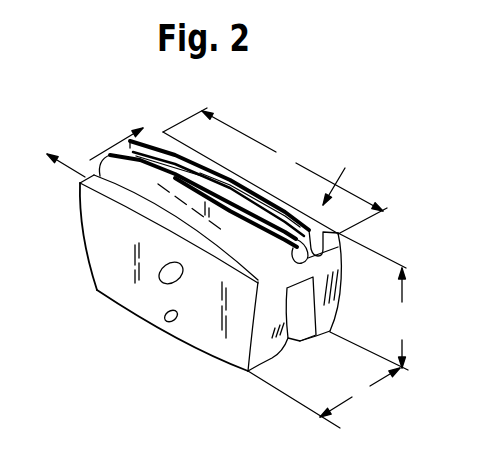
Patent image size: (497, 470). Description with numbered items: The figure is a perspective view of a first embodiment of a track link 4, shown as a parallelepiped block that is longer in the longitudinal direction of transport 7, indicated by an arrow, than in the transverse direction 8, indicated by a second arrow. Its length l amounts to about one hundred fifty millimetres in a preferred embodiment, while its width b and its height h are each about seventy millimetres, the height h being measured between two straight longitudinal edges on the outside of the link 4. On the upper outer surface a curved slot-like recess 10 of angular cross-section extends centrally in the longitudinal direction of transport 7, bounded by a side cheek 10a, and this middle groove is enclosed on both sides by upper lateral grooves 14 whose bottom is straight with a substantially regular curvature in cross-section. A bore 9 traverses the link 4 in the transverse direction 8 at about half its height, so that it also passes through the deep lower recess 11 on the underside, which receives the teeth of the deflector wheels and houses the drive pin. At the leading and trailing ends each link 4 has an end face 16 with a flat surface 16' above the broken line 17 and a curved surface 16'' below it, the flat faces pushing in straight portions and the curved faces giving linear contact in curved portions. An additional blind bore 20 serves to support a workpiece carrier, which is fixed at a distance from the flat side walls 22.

The link 4 is at (338, 174).
The longitudinal direction of transport 7 is at (72, 168).
The transverse direction 8 is at (108, 150).
The bore 9 is at (161, 280).
The slot-like recess 10 is at (108, 175).
The side cheek 10a is at (257, 237).
The lower recess 11 is at (297, 323).
The upper lateral groove 14 is at (132, 187).
The end face 16 is at (255, 382).
The flat surface 16' is at (273, 310).
The curved surface 16'' is at (324, 351).
The broken line 17 is at (322, 290).
The blind bore 20 is at (167, 328).
The flat side wall 22 is at (218, 310).
The length l is at (275, 171).
The height h is at (369, 301).
The width b is at (324, 398).